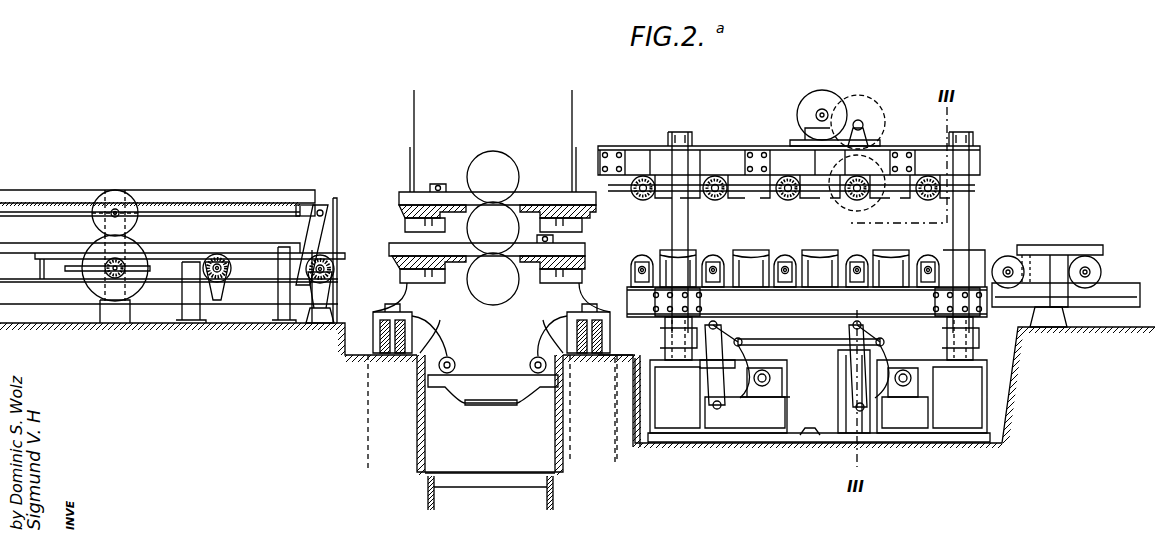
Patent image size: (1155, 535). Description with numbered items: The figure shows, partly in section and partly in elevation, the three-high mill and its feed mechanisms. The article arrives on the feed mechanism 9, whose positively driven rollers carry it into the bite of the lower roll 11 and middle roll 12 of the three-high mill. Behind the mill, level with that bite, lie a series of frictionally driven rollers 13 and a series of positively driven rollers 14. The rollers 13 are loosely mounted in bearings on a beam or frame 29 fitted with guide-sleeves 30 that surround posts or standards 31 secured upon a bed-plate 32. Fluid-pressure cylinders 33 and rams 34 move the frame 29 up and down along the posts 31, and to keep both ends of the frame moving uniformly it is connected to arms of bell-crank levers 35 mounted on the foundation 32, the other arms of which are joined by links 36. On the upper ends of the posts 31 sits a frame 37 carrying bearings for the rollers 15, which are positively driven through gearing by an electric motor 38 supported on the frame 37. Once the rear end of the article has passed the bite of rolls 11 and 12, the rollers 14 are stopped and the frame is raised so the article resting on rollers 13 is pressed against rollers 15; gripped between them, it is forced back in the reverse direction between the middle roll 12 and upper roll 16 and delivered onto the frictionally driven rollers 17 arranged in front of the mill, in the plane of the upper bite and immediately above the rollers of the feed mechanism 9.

The feed mechanism 9 is at (222, 258).
The lower roll 11 is at (493, 279).
The middle roll 12 is at (493, 228).
The frictionally-driven rollers 13 is at (714, 258).
The positively-driven rollers 14 is at (1103, 271).
The rollers 15 is at (720, 199).
The upper roll 16 is at (493, 177).
The frictionally-driven rollers 17 is at (122, 200).
The beam or frame 29 is at (807, 302).
The guide-sleeves 30 is at (818, 302).
The posts or standards 31 is at (672, 230).
The bed-plate 32 is at (819, 379).
The cylinders 33 is at (838, 388).
The rams 34 is at (733, 335).
The bell-crank levers 35 is at (765, 366).
The links 36 is at (792, 345).
The frame 37 is at (773, 160).
The electric motor 38 is at (820, 92).